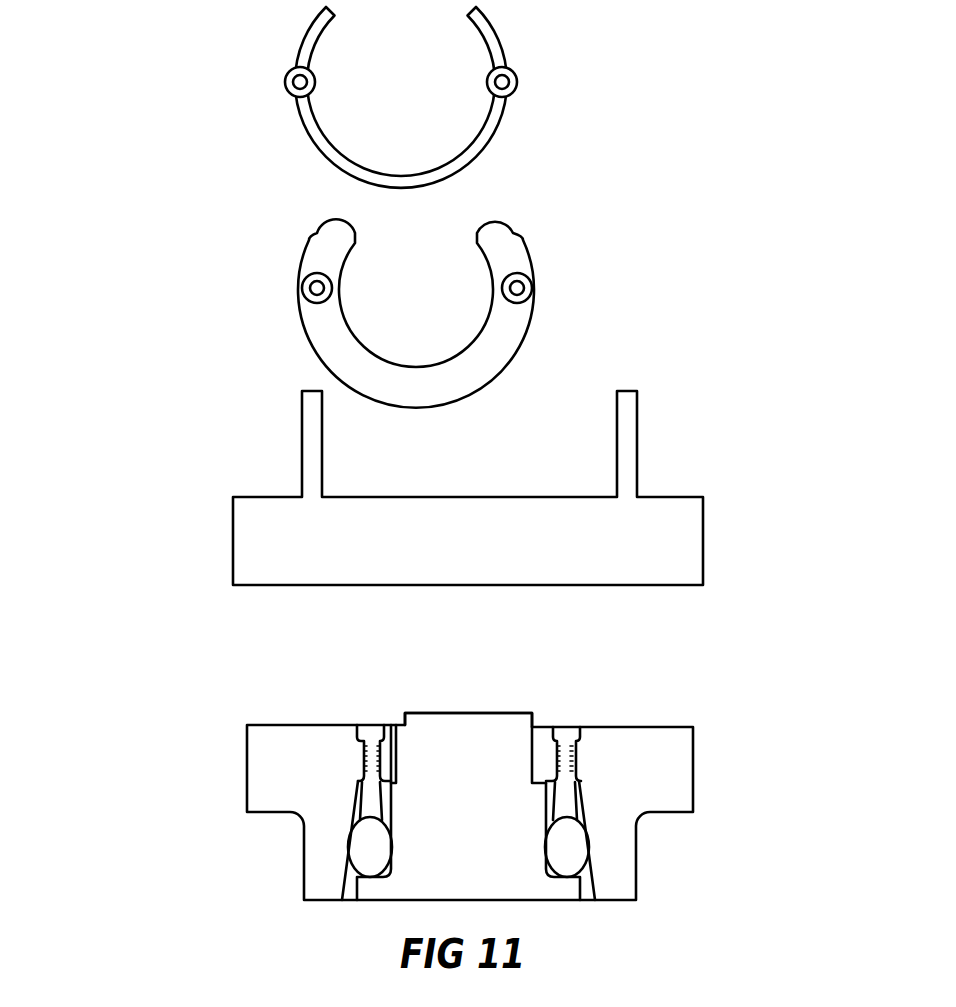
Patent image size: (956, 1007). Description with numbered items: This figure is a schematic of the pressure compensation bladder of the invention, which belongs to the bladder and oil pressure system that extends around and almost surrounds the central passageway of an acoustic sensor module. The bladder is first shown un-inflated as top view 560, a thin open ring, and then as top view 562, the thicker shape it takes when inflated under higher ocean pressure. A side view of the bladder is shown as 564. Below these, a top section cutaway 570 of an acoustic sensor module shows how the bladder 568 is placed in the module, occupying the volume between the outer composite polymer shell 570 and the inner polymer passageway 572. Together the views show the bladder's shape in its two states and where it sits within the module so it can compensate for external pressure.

The bladder un-inflated top view 560 is at (304, 126).
The bladder inflated top view 562 is at (298, 288).
The bladder side view 564 is at (233, 532).
The bladder 568 is at (572, 847).
The outer composite polymer shell 570 is at (247, 788).
The inner polymer passageway 572 is at (463, 723).